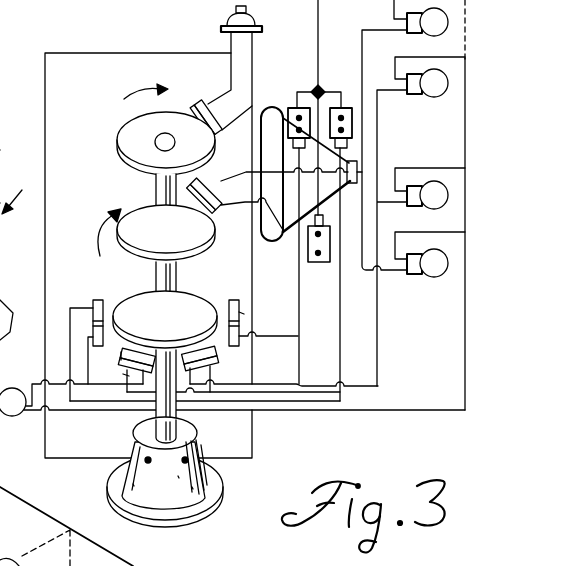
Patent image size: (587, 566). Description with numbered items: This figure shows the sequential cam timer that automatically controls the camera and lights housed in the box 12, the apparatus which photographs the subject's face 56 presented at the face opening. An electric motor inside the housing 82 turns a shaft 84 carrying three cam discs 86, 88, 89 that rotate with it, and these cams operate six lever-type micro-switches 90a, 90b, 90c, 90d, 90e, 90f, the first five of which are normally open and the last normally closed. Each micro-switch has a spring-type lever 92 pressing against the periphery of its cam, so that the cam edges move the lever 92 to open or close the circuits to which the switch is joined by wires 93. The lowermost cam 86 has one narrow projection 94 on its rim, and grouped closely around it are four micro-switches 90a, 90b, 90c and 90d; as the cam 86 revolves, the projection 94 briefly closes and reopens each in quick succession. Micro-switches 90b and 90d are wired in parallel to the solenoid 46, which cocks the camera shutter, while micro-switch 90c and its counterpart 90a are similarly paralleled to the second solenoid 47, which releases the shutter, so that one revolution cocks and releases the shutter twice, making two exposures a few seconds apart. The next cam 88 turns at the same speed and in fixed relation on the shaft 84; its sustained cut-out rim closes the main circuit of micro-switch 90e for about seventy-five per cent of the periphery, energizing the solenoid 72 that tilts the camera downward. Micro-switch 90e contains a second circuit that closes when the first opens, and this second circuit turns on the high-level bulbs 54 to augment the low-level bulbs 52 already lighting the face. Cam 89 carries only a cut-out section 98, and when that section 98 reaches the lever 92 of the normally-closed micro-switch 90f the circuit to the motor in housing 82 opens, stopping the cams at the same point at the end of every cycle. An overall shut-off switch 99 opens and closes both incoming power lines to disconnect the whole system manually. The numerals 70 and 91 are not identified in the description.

The box 12 is at (99, 526).
The solenoid 46 is at (301, 68).
The second solenoid 47 is at (344, 104).
The bulb or pair of bulbs 52 is at (427, 139).
The second bulb or pair of bulbs 54 is at (427, 142).
The subject's face 56 is at (12, 192).
The control member 70 is at (7, 140).
The solenoid 72 is at (312, 262).
The housing 82 is at (166, 500).
The shaft 84 is at (156, 193).
The lowermost cam 86 is at (201, 327).
The cam 88 is at (200, 241).
The cam 89 is at (146, 161).
The micro-switch 90a is at (98, 300).
The micro-switch 90b is at (136, 347).
The micro-switch 90c is at (193, 348).
The micro-switch 90d is at (235, 300).
The micro-switch 90e is at (217, 177).
The micro-switch 90f is at (200, 98).
The knob 91 is at (223, 27).
The lever 92 is at (226, 305).
The wires 93 is at (243, 312).
The projection 94 is at (123, 356).
The cut-out section 98 is at (119, 134).
The overall shut-off switch 99 is at (13, 402).